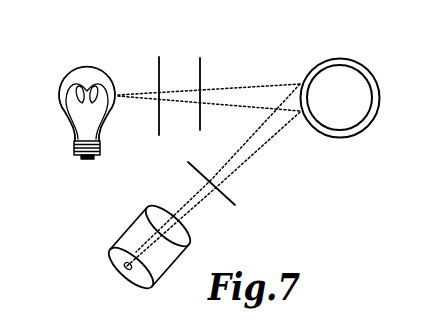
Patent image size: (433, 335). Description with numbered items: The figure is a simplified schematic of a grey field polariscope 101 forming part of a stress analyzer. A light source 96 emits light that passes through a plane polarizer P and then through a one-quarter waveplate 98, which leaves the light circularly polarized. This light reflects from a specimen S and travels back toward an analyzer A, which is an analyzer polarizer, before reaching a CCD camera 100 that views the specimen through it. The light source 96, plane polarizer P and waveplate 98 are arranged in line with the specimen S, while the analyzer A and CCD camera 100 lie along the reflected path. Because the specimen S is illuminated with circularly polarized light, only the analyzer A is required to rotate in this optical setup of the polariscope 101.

The light source 96 is at (90, 67).
The plane polarizer P is at (158, 83).
The one-quarter waveplate 98 is at (201, 73).
The specimen S is at (331, 58).
The analyzer A is at (219, 192).
The grey field polariscope 101 is at (265, 172).
The CCD camera 100 is at (130, 227).